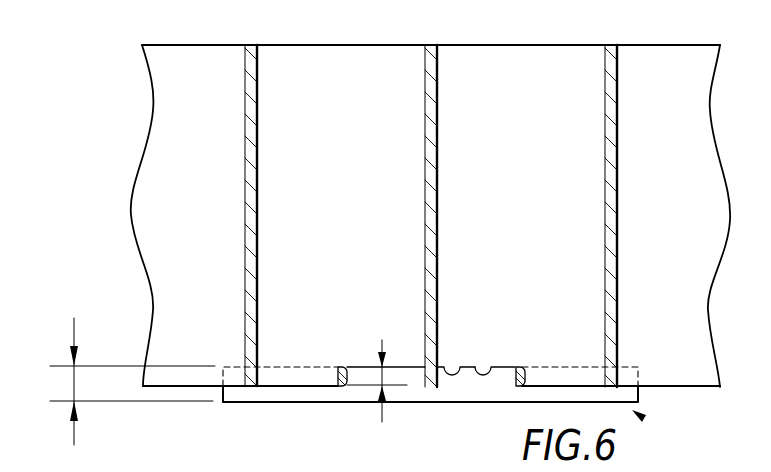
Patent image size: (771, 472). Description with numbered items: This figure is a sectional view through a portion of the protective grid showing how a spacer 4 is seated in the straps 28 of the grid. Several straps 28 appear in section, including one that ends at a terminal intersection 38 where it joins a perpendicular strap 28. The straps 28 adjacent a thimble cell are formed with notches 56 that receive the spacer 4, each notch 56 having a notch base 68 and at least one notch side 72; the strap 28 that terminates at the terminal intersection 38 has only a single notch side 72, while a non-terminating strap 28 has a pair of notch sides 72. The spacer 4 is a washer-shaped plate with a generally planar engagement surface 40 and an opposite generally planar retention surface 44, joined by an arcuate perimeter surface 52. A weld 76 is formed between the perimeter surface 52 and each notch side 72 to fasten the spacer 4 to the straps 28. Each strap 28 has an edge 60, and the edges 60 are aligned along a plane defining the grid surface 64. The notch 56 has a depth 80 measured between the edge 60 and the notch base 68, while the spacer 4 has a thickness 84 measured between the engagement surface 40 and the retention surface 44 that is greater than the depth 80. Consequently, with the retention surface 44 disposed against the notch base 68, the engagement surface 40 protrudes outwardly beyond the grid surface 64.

The spacer 4 is at (644, 419).
The strap 28 is at (430, 197).
The terminal intersection 38 is at (424, 98).
The engagement surface 40 is at (488, 389).
The retention surface 44 is at (567, 367).
The perimeter surface 52 is at (317, 393).
The notch 56 is at (460, 366).
The edge 60 is at (667, 390).
The grid surface 64 is at (700, 390).
The notch base 68 is at (493, 366).
The notch side 72 is at (433, 380).
The weld 76 is at (351, 378).
The depth 80 is at (385, 372).
The thickness 84 is at (74, 379).